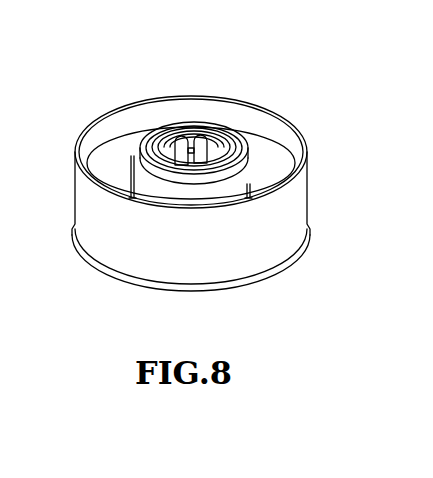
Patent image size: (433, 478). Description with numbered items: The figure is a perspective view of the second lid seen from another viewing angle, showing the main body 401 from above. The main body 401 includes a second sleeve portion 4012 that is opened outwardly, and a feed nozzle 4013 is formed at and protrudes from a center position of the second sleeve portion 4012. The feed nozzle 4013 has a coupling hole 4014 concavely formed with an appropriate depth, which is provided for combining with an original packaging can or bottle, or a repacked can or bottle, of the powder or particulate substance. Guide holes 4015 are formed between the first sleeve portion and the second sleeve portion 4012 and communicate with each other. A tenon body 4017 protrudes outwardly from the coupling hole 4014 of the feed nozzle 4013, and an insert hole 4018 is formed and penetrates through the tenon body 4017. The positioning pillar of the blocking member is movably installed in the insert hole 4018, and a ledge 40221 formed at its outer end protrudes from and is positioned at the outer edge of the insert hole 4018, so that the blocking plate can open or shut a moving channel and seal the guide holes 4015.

The main body 401 is at (83, 203).
The second sleeve portion 4012 is at (237, 123).
The feed nozzle 4013 is at (133, 160).
The coupling hole 4014 is at (209, 151).
The guide holes 4015 is at (249, 188).
The tenon body 4017 is at (142, 183).
The insert hole 4018 is at (189, 147).
The ledge 40221 is at (173, 164).